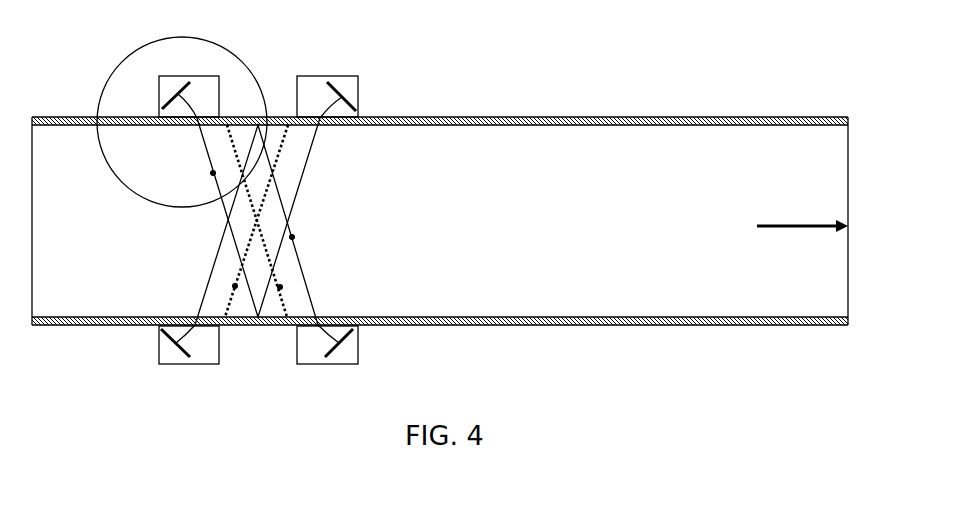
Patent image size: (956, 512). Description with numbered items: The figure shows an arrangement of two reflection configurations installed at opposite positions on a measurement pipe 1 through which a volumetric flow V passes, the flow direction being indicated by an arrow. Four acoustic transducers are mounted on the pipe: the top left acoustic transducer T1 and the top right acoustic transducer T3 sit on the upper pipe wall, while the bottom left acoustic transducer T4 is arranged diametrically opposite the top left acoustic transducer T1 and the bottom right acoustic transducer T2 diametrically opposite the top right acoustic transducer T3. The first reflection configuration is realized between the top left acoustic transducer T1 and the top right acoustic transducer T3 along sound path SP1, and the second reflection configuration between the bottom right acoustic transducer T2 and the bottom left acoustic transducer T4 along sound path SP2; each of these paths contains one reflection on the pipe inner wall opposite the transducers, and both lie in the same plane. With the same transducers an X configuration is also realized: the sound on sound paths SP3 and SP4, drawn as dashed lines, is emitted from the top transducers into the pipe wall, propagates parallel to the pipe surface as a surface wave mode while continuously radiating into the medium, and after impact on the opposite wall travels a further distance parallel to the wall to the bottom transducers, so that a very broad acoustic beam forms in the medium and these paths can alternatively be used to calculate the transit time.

The measurement pipe 1 is at (440, 200).
The volumetric flow V is at (802, 198).
The top left acoustic transducer T1 is at (189, 82).
The bottom right acoustic transducer T2 is at (327, 360).
The top right acoustic transducer T3 is at (327, 82).
The bottom left acoustic transducer T4 is at (189, 360).
The sound path SP1 is at (213, 173).
The sound path SP2 is at (292, 237).
The sound path SP3 is at (235, 286).
The sound path SP4 is at (280, 287).